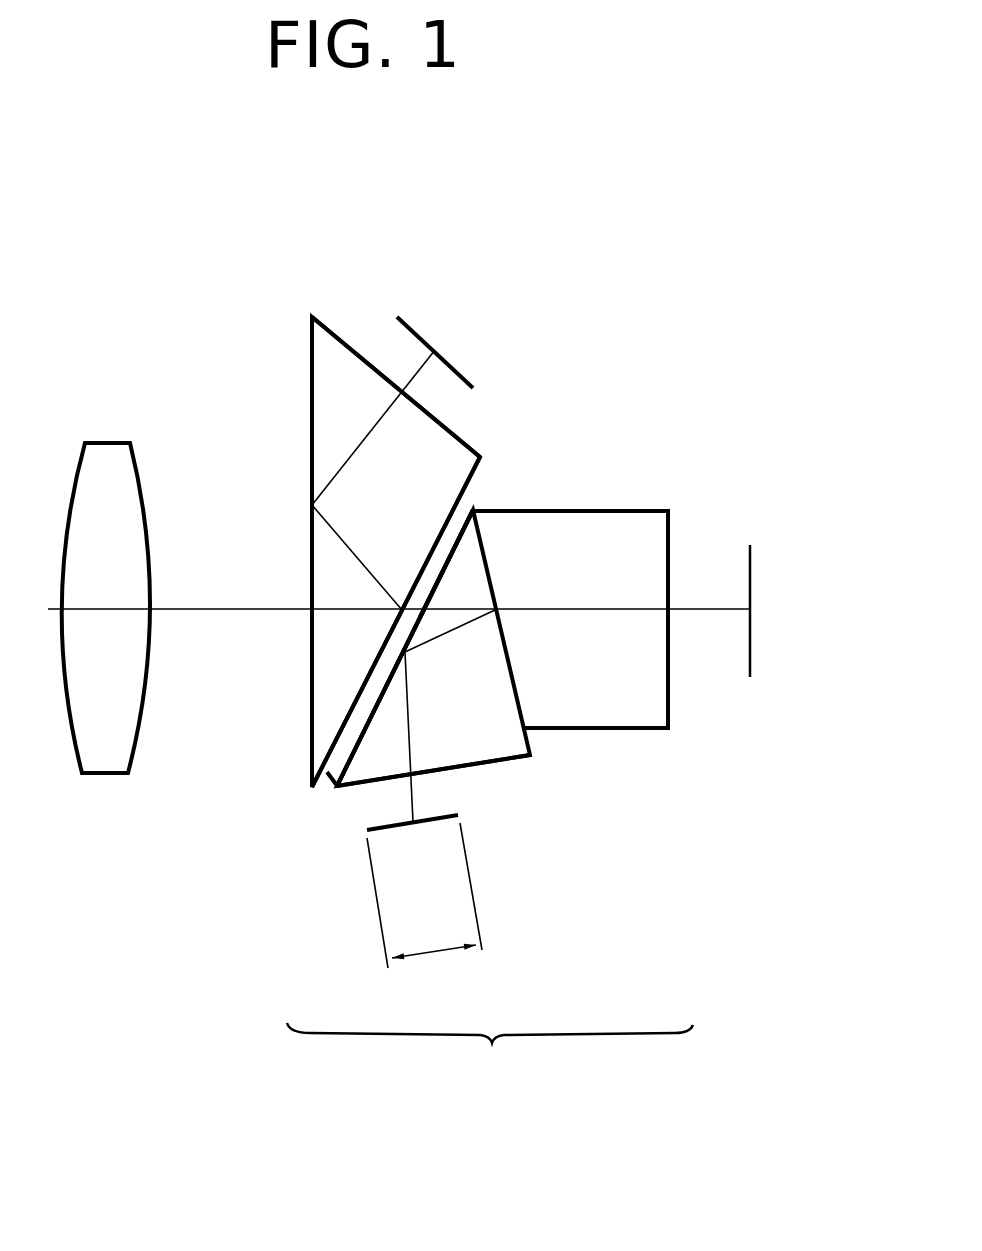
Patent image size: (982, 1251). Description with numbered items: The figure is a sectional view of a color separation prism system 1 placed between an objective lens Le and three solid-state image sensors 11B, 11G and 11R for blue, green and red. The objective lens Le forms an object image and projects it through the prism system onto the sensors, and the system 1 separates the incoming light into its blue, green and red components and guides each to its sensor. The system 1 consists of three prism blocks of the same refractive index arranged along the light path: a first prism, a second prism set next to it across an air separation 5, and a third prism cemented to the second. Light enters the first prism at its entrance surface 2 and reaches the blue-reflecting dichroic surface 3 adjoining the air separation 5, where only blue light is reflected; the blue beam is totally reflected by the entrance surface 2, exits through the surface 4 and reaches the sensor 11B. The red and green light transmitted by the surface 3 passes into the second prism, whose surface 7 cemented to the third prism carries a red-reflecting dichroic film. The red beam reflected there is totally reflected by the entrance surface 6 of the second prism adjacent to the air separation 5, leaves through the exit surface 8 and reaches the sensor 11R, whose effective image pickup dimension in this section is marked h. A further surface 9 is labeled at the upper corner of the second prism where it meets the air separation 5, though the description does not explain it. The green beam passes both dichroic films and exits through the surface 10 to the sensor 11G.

The color separation prism system 1 is at (490, 1062).
The entrance surface 2 is at (310, 755).
The blue-reflecting dichroic surface 3 is at (336, 727).
The exit surface of first prism 4 is at (458, 433).
The air separation 5 is at (330, 775).
The entrance surface of second prism 6 is at (356, 752).
The red-reflecting dichroic surface 7 is at (503, 663).
The exit surface of second prism 8 is at (490, 765).
The entrance surface of second prism 9 is at (477, 532).
The exit surface for green 10 is at (668, 545).
The solid-state image sensor for blue 11B is at (448, 362).
The solid-state image sensor for green 11G is at (750, 575).
The solid-state image sensor for red 11R is at (437, 823).
The objective lens Le is at (110, 443).
The effective image pickup dimension h is at (424, 895).